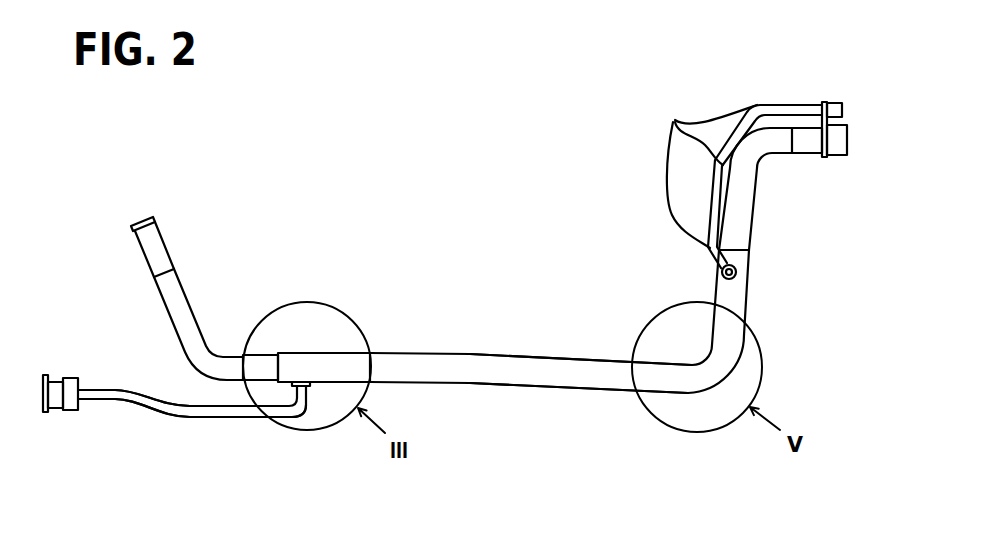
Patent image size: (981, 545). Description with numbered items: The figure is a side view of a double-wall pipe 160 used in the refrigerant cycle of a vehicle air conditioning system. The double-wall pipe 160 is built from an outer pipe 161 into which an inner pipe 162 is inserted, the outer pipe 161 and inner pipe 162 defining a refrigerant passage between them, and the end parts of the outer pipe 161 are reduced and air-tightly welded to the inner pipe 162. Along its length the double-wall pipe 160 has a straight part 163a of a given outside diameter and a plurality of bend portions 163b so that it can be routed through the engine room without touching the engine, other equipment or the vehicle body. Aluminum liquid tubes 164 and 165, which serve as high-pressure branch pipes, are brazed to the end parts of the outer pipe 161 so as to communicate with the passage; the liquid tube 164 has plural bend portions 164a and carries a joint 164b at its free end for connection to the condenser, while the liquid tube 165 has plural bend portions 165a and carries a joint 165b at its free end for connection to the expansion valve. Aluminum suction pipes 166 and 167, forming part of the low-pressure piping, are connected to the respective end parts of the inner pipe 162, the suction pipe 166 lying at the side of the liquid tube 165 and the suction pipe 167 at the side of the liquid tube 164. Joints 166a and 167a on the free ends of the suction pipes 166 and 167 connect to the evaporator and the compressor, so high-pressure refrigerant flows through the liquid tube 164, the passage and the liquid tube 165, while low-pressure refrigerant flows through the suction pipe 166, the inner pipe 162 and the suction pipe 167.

The double-wall pipe 160 is at (410, 352).
The outer pipe 161 is at (346, 363).
The inner pipe 162 is at (262, 362).
The straight part 163a is at (560, 376).
The bend portion 163b is at (697, 369).
The liquid tube 164 is at (103, 391).
The bend portion 164a is at (292, 413).
The joint 164b is at (55, 405).
The liquid tube 165 is at (806, 105).
The bend portion 165a is at (702, 167).
The joint 165b is at (838, 112).
The suction pipe 166 is at (808, 143).
The joint 166a is at (838, 145).
The suction pipe 167 is at (147, 264).
The joint 167a is at (133, 227).